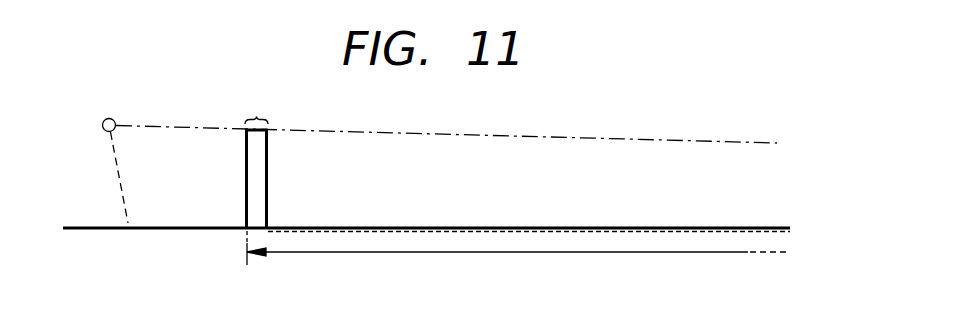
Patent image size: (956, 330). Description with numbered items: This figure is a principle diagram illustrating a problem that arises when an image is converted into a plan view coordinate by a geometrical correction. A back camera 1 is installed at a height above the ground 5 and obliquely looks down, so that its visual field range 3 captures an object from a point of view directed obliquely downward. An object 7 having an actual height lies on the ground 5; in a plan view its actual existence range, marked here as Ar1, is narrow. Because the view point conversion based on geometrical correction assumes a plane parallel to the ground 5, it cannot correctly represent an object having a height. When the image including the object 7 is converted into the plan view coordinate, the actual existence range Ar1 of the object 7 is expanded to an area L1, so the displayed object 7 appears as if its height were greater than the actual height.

The back camera 1 is at (103, 120).
The visual field range 3 is at (185, 188).
The ground 5 is at (93, 227).
The object 7 is at (258, 185).
The area Ar1 is at (260, 106).
The area L1 is at (517, 258).